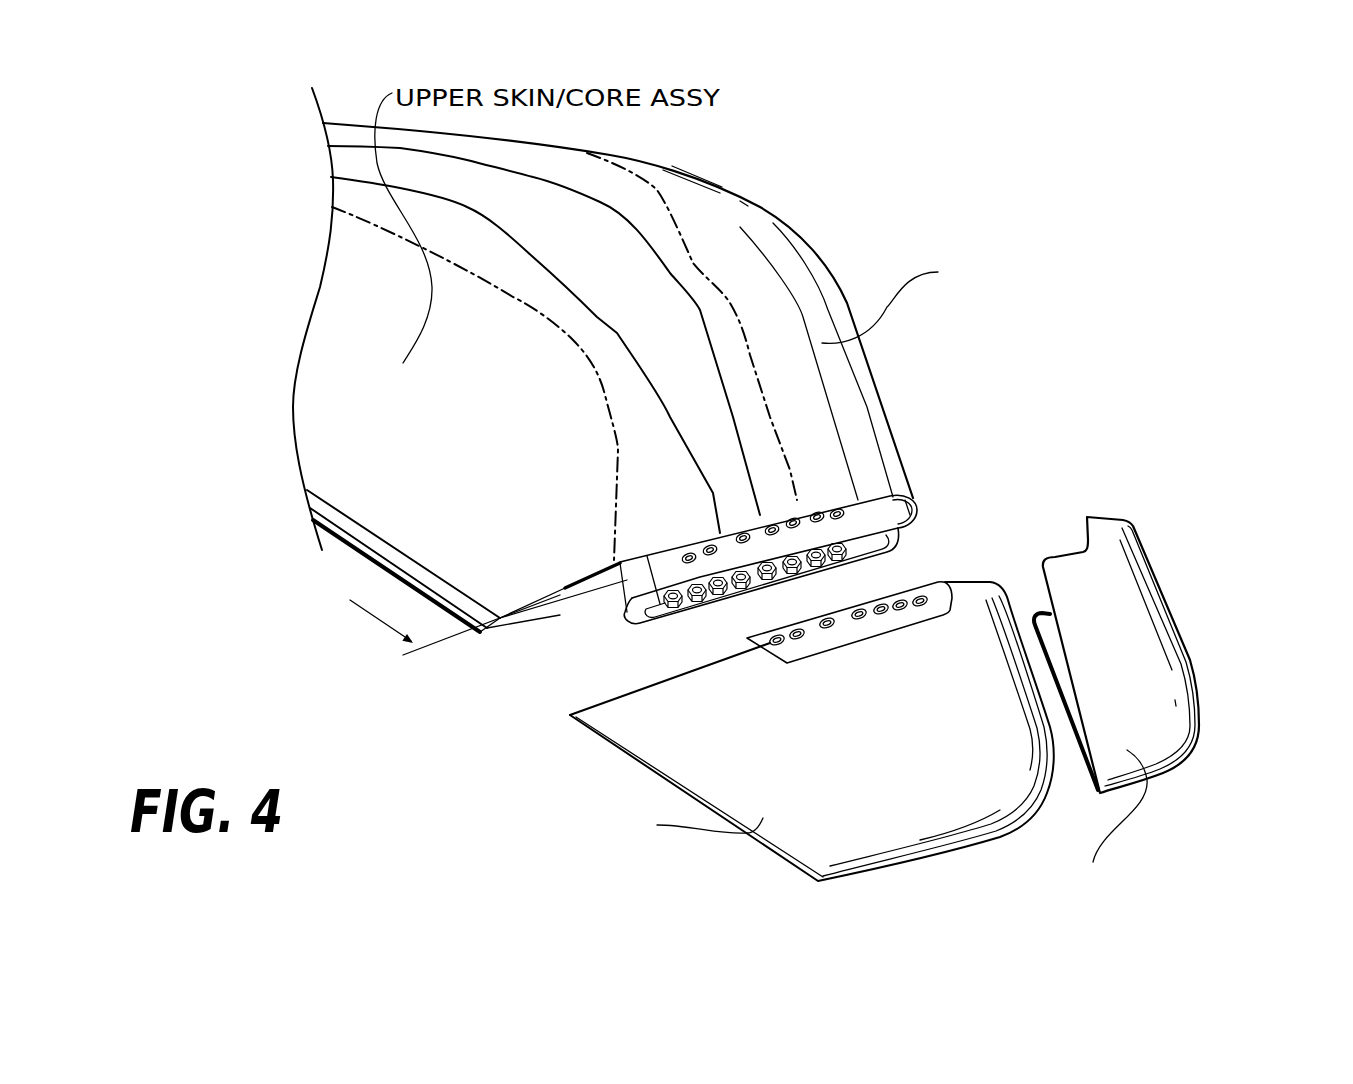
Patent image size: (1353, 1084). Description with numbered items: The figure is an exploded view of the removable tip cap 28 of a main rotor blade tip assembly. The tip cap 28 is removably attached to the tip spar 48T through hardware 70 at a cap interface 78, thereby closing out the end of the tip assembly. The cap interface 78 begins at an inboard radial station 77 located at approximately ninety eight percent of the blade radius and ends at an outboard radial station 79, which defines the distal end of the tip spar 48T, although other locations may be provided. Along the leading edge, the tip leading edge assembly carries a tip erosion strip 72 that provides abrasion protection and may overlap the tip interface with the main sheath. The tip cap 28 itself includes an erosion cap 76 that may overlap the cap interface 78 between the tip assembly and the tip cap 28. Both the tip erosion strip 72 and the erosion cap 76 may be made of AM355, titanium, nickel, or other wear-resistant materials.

The tip erosion strip 72 is at (855, 202).
The hardware 70 is at (817, 516).
The tip spar 48T is at (865, 513).
The cap interface 78 is at (946, 547).
The outboard radial station 79 is at (640, 627).
The inboard radial station 77 is at (443, 642).
The erosion cap 76 is at (1187, 727).
The tip cap 28 is at (827, 688).